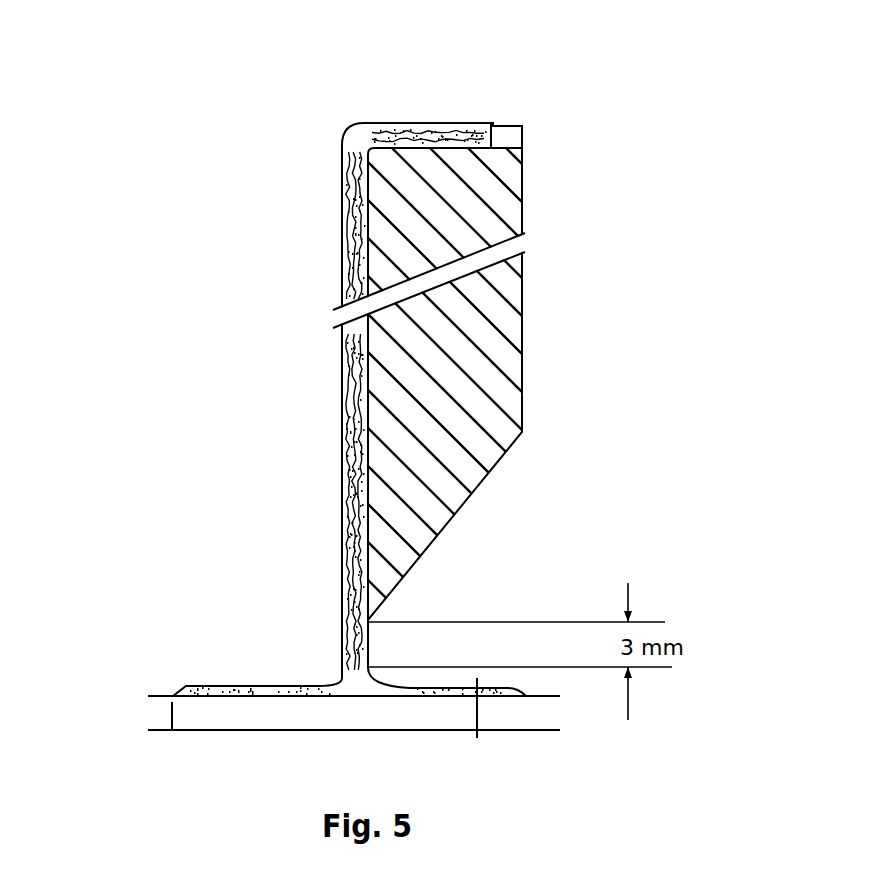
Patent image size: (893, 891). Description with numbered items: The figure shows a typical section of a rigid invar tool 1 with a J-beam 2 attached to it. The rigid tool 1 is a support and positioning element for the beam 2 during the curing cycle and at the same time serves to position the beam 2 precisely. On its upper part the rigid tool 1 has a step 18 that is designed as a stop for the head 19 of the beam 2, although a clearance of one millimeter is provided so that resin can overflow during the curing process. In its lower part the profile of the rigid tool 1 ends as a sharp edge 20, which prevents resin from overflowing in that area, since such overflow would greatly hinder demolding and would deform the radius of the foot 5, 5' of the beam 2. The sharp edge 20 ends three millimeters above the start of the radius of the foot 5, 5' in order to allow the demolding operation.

The rigid tool 1 is at (474, 367).
The beam 2 is at (345, 427).
The foot 5 is at (195, 596).
The foot 5' is at (560, 606).
The step 18 is at (489, 140).
The head 19 is at (413, 122).
The sharp edge 20 is at (375, 618).